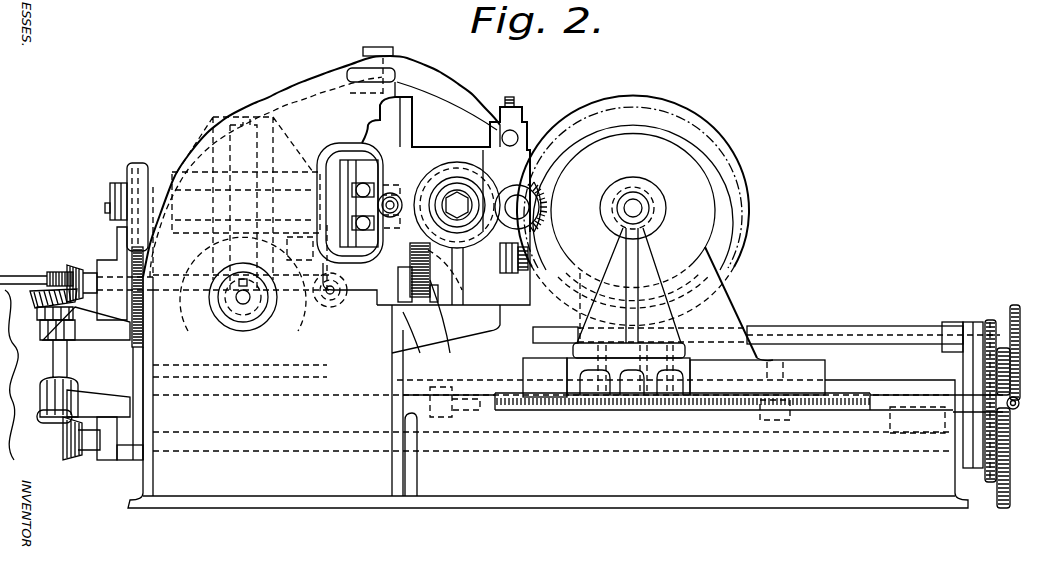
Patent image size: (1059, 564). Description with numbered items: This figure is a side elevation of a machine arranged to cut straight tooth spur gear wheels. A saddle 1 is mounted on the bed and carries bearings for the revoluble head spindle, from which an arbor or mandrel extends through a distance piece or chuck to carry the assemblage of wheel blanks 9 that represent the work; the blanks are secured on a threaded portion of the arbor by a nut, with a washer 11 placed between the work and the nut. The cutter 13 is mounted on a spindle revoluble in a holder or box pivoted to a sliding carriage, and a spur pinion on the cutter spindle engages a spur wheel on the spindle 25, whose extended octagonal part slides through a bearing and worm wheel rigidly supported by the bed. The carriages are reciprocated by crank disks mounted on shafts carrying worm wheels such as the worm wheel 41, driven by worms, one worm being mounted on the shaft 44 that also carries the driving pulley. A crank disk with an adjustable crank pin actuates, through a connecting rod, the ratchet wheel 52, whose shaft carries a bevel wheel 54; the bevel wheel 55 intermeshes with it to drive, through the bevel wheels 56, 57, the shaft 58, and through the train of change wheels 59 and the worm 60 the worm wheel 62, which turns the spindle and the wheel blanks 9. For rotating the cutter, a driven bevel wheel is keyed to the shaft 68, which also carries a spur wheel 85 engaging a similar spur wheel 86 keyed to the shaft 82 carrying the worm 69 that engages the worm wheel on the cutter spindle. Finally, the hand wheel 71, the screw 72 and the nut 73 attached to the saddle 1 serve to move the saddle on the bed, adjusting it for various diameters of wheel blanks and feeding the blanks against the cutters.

The saddle 1 is at (722, 290).
The wheel blanks 9 is at (633, 211).
The washer 11 is at (653, 217).
The cutter 13 is at (547, 210).
The spindle 25 is at (458, 195).
The worm wheel 41 is at (245, 120).
The shaft 44 is at (245, 303).
The ratchet wheel 52 is at (130, 318).
The bevel wheel 54 is at (80, 265).
The bevel wheel 55 is at (53, 273).
The bevel wheel 56 is at (43, 423).
The bevel wheel 57 is at (72, 460).
The shaft 58 is at (848, 450).
The train of change wheels 59 is at (1020, 405).
The worm 60 is at (720, 311).
The worm wheel 62 is at (702, 122).
The shaft 68 is at (395, 292).
The worm 69 is at (473, 273).
The hand wheel 71 is at (992, 323).
The screw 72 is at (880, 398).
The nut 73 is at (790, 418).
The shaft 82 is at (513, 273).
The spur wheel 85 is at (420, 288).
The spur wheel 86 is at (448, 288).